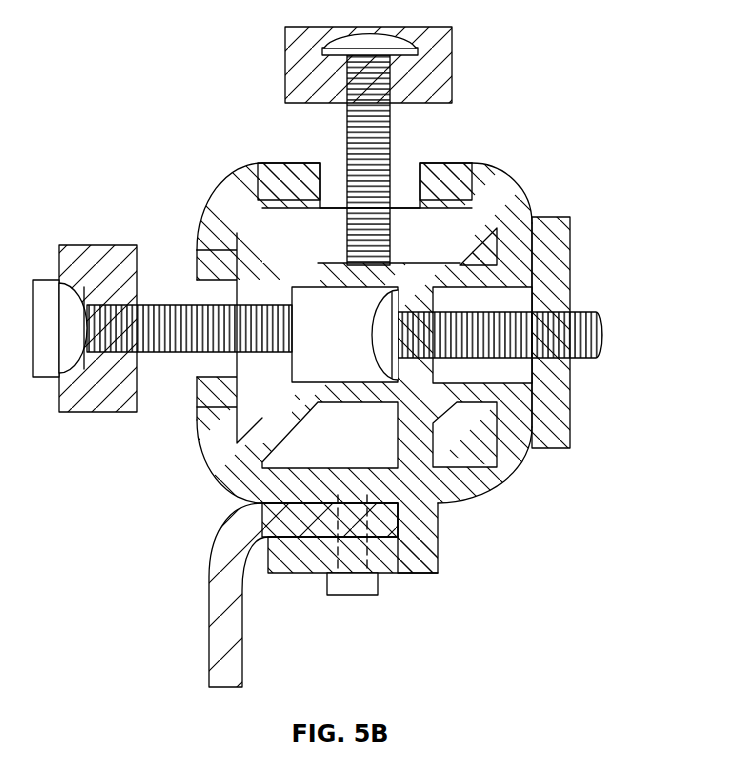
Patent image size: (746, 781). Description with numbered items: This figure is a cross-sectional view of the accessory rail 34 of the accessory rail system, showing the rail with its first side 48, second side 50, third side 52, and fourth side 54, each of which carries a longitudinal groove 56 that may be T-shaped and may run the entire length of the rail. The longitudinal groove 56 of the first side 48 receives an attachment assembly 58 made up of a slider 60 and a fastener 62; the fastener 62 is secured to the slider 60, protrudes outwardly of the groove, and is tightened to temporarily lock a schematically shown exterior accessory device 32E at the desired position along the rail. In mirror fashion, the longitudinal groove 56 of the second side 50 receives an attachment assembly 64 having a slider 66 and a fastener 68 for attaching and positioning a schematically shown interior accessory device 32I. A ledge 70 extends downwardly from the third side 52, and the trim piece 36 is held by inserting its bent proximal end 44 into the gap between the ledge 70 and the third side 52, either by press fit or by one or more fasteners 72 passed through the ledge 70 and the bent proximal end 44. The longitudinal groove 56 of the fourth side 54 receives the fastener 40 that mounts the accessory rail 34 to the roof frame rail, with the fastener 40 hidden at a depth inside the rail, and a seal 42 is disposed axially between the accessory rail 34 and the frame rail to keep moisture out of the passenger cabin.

The exterior accessory device 32E is at (440, 52).
The interior accessory device 32I is at (107, 244).
The accessory rail 34 is at (596, 124).
The trim piece 36 is at (222, 624).
The fastener 40 is at (590, 342).
The seal 42 is at (545, 253).
The bent proximal end 44 is at (318, 520).
The first side 48 is at (290, 166).
The second side 50 is at (222, 233).
The third side 52 is at (465, 500).
The fourth side 54 is at (520, 197).
The longitudinal groove 56 is at (425, 172).
The attachment assembly 58 is at (338, 158).
The slider 60 is at (397, 377).
The fastener 62 is at (347, 127).
The attachment assembly 64 is at (206, 377).
The slider 66 is at (196, 438).
The fastener 68 is at (180, 304).
The ledge 70 is at (394, 566).
The fastener 72 is at (352, 556).